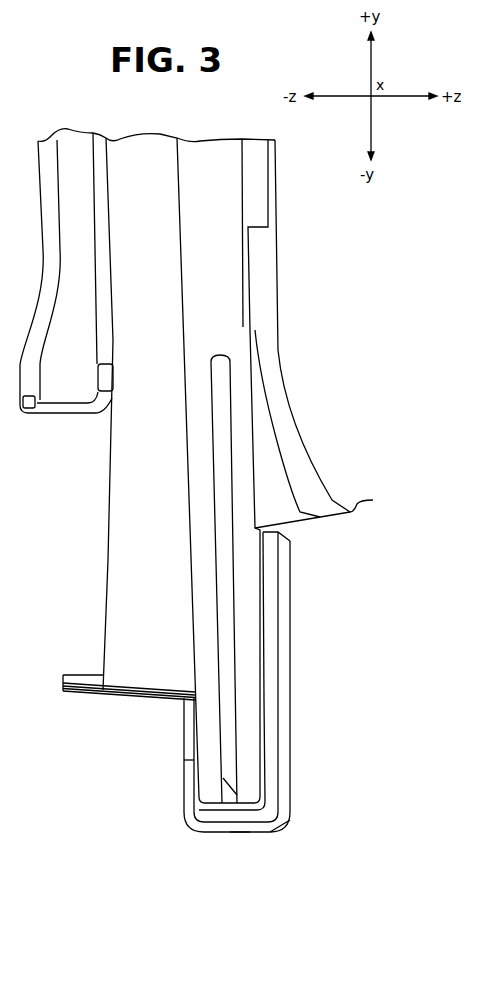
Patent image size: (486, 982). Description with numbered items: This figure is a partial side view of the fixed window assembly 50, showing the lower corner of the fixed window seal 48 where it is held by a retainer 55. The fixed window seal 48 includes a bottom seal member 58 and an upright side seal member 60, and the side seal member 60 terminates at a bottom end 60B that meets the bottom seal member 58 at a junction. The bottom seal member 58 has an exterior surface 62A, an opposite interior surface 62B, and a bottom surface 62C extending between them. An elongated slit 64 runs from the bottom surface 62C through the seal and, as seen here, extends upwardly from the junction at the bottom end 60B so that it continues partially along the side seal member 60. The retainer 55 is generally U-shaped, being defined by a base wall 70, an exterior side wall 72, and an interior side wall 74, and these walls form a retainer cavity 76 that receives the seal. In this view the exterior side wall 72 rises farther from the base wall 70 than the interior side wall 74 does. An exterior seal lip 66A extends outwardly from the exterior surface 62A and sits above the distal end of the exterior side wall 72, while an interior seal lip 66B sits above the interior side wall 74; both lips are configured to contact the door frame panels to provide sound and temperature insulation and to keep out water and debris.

The fixed window seal 48 is at (295, 250).
The fixed window assembly 50 is at (398, 277).
The retainer 55 is at (288, 840).
The bottom seal member 58 is at (115, 753).
The side seal member 60 is at (222, 318).
The bottom end of side seal member 60B is at (200, 808).
The exterior surface 62A is at (290, 728).
The interior surface 62B is at (183, 737).
The bottom surface 62C is at (215, 828).
The slit 64 is at (266, 798).
The exterior seal lip 66A is at (373, 500).
The interior seal lip 66B is at (68, 676).
The base wall 70 is at (243, 814).
The exterior side wall 72 is at (275, 683).
The interior side wall 74 is at (190, 765).
The retainer cavity 76 is at (268, 773).